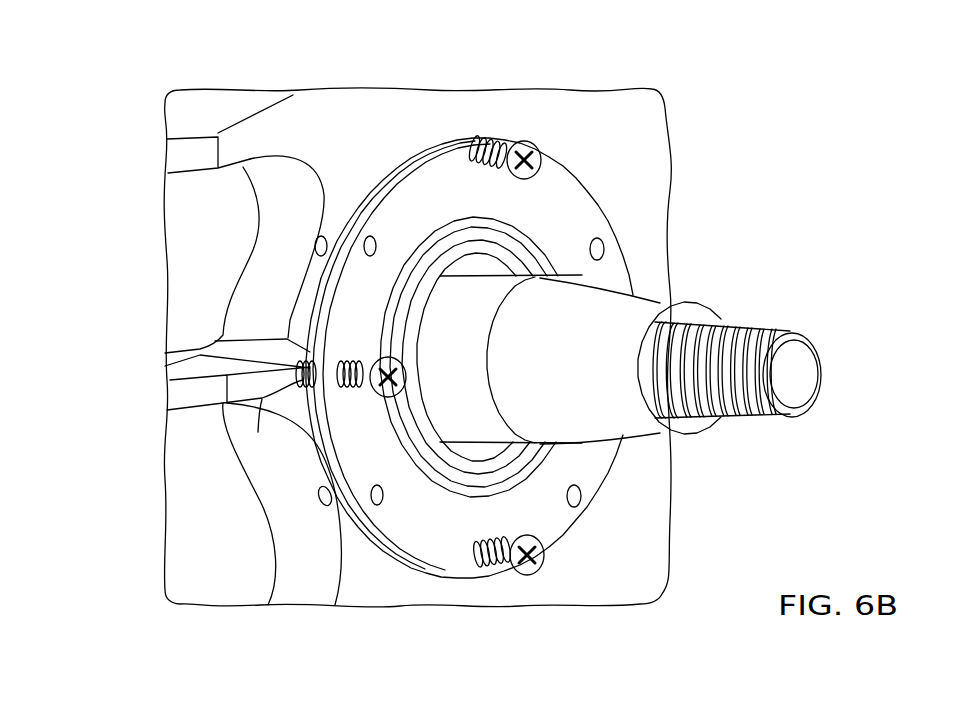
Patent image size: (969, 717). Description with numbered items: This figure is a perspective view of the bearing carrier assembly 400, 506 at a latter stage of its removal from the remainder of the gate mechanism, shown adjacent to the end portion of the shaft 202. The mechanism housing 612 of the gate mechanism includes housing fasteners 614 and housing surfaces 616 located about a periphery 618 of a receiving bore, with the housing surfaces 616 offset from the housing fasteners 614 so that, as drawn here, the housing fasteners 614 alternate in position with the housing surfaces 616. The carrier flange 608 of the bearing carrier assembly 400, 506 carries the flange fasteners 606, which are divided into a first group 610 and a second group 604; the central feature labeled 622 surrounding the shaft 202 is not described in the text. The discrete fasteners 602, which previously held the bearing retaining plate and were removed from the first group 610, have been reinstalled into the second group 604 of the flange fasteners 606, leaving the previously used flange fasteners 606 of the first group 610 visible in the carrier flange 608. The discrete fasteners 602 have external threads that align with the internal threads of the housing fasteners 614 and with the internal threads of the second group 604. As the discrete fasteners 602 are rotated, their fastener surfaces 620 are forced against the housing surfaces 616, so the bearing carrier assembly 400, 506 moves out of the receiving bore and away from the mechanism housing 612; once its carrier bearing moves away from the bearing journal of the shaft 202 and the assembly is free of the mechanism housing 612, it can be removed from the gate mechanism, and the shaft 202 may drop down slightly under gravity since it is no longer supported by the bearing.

The shaft 202 is at (637, 318).
The bearing carrier assembly 400 is at (187, 200).
The bearing carrier assembly 506 is at (330, 305).
The discrete fasteners 602 is at (532, 150).
The second group of the flange fasteners 604 is at (465, 148).
The flange fasteners 606 is at (420, 345).
The carrier flange 608 is at (568, 212).
The first group of the flange fasteners 610 is at (368, 240).
The mechanism housing 612 is at (358, 107).
The housing fasteners 614 is at (320, 243).
The housing surfaces 616 is at (165, 353).
The periphery of the receiving bore 618 is at (310, 272).
The fastener surfaces 620 is at (263, 433).
The hub 622 is at (407, 378).